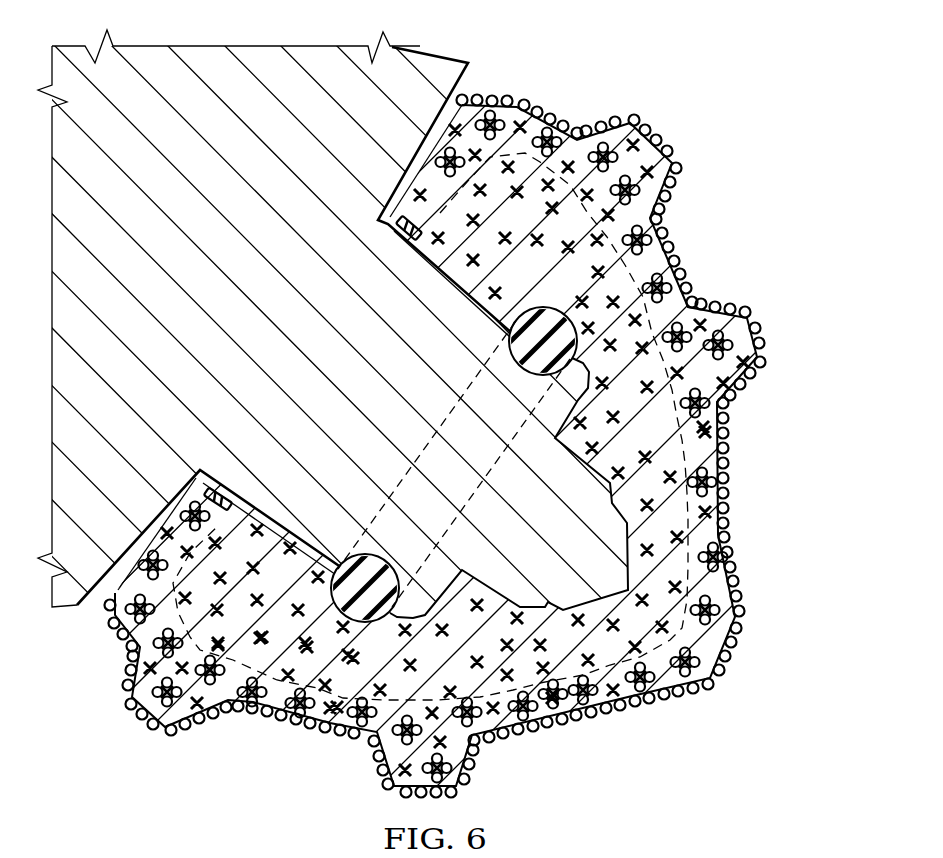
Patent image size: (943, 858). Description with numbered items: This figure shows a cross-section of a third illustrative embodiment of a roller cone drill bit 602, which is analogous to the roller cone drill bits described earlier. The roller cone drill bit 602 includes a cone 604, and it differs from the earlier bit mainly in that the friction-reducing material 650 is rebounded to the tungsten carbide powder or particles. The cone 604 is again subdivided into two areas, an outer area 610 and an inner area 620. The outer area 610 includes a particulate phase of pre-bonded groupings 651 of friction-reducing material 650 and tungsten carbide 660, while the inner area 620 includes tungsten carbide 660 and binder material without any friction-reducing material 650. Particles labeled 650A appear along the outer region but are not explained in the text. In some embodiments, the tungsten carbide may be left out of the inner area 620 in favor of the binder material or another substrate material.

The roller cone drill bit 602 is at (710, 43).
The outer area 610 is at (510, 110).
The inner area 620 is at (622, 278).
The cone 604 is at (648, 437).
The friction-reducing material 650 is at (732, 348).
The outer layer particles 650A is at (732, 402).
The pre-bonded groupings 651 is at (582, 135).
The tungsten carbide 660 is at (442, 245).